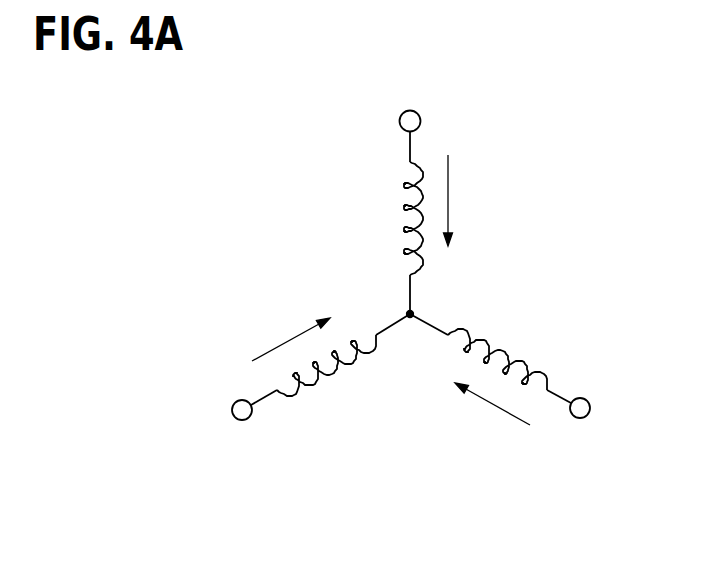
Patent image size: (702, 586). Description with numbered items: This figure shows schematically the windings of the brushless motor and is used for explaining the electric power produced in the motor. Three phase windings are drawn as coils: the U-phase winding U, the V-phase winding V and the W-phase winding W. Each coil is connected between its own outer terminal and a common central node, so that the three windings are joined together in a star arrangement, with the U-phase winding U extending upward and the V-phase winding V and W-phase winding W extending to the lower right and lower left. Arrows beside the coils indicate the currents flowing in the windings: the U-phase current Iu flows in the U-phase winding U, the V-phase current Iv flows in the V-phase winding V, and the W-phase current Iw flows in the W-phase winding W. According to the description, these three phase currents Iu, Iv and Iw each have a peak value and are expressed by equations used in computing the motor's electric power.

The U-phase winding U is at (397, 218).
The V-phase winding V is at (497, 354).
The W-phase winding W is at (326, 371).
The U-phase current Iu is at (461, 200).
The V-phase current Iv is at (492, 408).
The W-phase current Iw is at (291, 335).